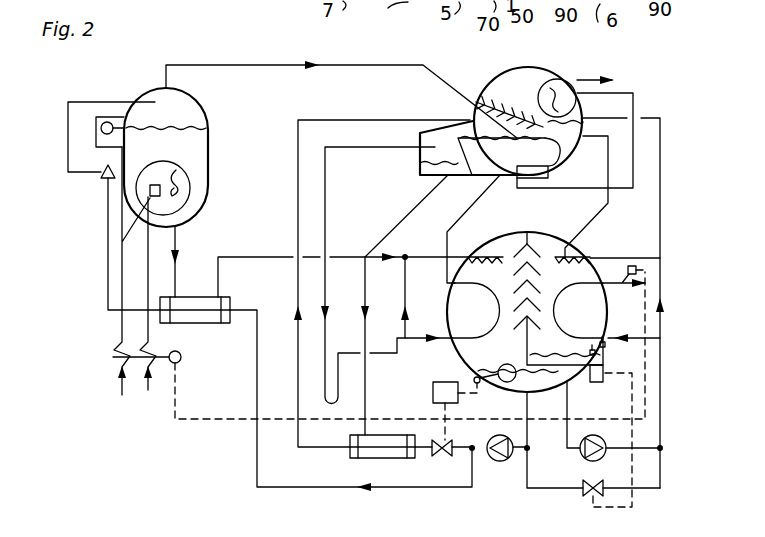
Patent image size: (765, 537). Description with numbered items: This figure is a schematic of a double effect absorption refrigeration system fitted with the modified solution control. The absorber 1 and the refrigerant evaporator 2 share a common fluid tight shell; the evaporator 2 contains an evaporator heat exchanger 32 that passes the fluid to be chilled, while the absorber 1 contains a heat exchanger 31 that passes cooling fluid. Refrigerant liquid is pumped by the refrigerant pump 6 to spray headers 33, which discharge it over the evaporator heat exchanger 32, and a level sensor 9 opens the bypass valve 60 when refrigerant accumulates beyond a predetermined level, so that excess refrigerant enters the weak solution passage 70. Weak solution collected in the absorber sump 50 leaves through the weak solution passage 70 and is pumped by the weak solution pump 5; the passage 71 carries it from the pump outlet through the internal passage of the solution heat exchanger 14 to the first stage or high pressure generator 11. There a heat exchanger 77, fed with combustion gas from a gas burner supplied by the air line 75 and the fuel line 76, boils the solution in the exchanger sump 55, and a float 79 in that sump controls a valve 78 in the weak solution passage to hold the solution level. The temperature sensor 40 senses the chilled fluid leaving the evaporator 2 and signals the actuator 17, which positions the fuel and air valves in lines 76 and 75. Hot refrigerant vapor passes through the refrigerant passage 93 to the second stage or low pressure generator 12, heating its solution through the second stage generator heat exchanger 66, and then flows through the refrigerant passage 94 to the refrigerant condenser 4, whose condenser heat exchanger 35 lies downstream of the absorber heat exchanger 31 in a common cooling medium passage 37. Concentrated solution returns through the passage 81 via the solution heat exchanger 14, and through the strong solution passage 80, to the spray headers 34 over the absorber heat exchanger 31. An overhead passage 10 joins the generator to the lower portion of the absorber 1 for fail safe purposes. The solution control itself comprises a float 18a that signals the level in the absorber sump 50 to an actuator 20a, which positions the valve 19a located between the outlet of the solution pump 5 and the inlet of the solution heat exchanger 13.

The absorber 1 is at (474, 324).
The refrigerant evaporator 2 is at (590, 324).
The refrigerant condenser 4 is at (518, 88).
The weak solution pump 5 is at (500, 462).
The refrigerant pump 6 is at (600, 461).
The level sensor 9 is at (603, 384).
The overhead passage 10 is at (338, 325).
The high pressure generator 11 is at (178, 116).
The low pressure generator 12 is at (497, 166).
The solution heat exchanger 13 is at (368, 456).
The solution heat exchanger 14 is at (222, 324).
The actuator 17 is at (181, 362).
The float 18a is at (502, 372).
The valve 19a is at (434, 464).
The actuator 20a is at (444, 382).
The absorber heat exchanger 31 is at (470, 276).
The evaporator heat exchanger 32 is at (585, 280).
The spray headers 33 is at (581, 256).
The spray headers 34 is at (492, 257).
The condenser heat exchanger 35 is at (557, 99).
The common cooling medium passage 37 is at (463, 213).
The temperature sensor 40 is at (632, 265).
The absorber sump 50 is at (515, 393).
The exchanger sump 55 is at (208, 163).
The bypass valve 60 is at (580, 492).
The second stage generator heat exchanger 66 is at (548, 178).
The weak solution passage 70 is at (298, 192).
The passage 71 is at (108, 256).
The air line 75 is at (120, 381).
The fuel line 76 is at (148, 393).
The heat exchanger 77 is at (190, 198).
The valve 78 is at (100, 180).
The float 79 is at (113, 132).
The strong solution passage 80 is at (367, 266).
The passage 81 is at (178, 234).
The refrigerant passage 93 is at (290, 64).
The refrigerant passage 94 is at (622, 93).